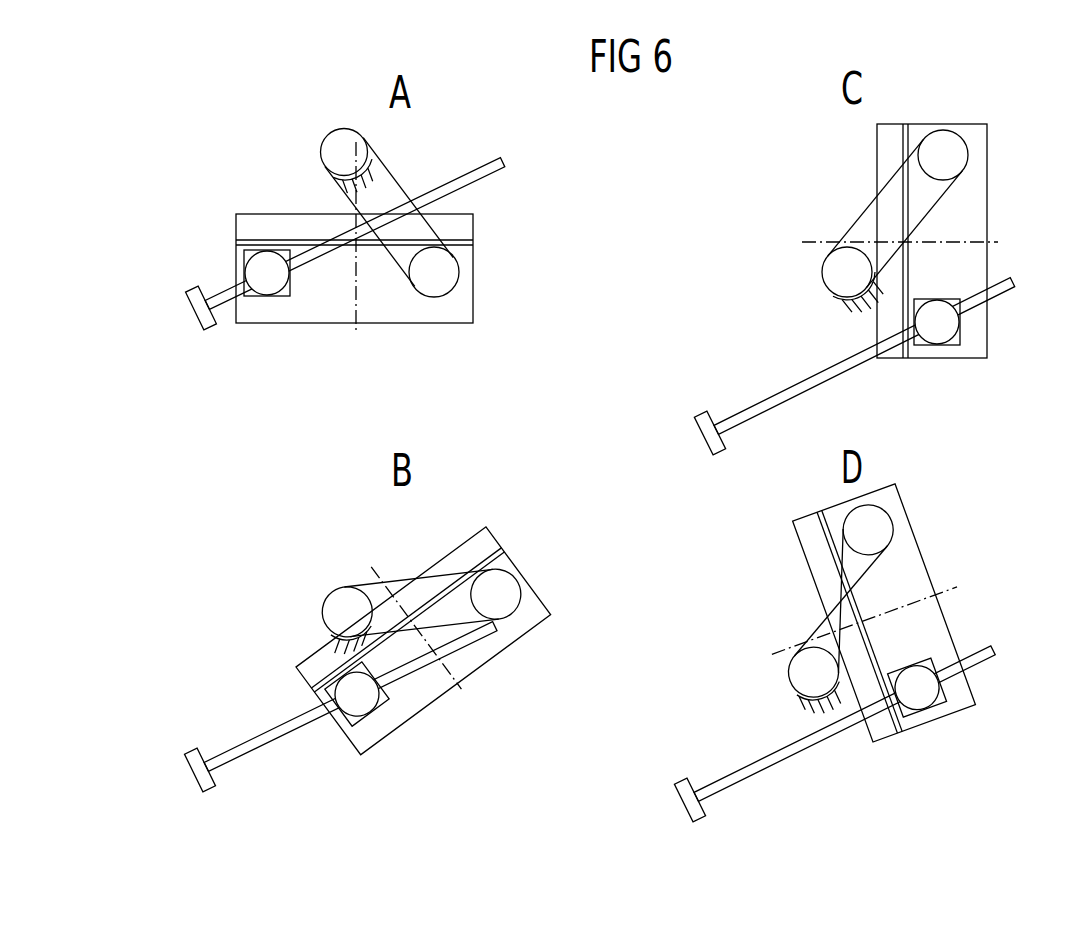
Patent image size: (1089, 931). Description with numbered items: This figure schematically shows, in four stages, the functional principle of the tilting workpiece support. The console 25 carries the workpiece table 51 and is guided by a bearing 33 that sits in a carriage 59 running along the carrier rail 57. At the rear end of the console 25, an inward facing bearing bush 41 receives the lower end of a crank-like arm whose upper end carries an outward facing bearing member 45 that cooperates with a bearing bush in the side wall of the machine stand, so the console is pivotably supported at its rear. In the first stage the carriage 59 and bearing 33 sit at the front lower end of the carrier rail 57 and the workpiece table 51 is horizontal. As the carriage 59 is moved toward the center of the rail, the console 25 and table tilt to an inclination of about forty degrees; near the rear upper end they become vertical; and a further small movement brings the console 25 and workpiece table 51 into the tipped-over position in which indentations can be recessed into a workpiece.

The console 25 is at (465, 310).
The bearing 33 is at (277, 277).
The bearing bush 41 is at (447, 270).
The bearing member 45 is at (334, 152).
The workpiece table 51 is at (253, 225).
The carrier rail 57 is at (460, 180).
The carriage 59 is at (248, 298).